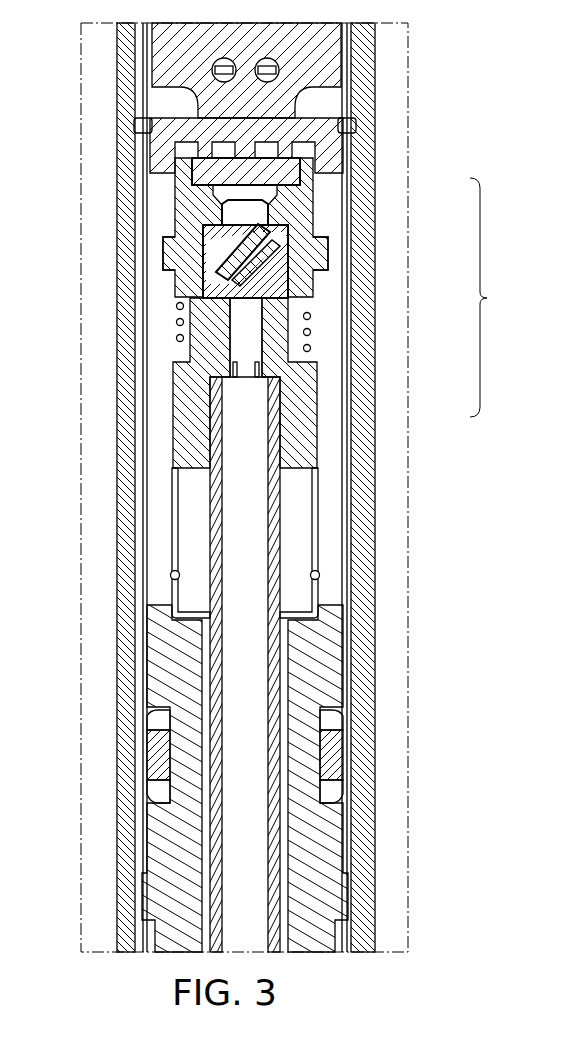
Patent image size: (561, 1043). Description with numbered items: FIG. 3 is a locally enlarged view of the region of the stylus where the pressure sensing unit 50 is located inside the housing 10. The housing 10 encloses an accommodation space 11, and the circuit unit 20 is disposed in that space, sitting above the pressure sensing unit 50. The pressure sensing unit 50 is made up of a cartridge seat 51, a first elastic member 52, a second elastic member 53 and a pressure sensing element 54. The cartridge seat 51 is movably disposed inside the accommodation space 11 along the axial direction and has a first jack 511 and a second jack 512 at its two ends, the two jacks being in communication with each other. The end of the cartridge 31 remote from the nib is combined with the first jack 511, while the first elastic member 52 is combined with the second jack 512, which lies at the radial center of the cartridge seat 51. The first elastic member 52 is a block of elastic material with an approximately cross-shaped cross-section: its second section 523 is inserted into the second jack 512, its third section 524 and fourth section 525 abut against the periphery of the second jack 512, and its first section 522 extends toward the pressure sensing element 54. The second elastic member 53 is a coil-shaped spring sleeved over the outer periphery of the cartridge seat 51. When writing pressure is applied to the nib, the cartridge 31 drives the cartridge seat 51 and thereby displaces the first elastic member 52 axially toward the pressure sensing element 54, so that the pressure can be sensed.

The housing 10 is at (117, 639).
The accommodation space 11 is at (348, 452).
The circuit unit 20 is at (151, 48).
The cartridge 31 is at (277, 487).
The pressure sensing unit 50 is at (492, 297).
The cartridge seat 51 is at (300, 428).
The first jack 511 is at (205, 410).
The second jack 512 is at (232, 300).
The first elastic member 52 is at (300, 250).
The first section 522 is at (220, 212).
The second section 523 is at (176, 306).
The third section 524 is at (212, 246).
The fourth section 525 is at (222, 274).
The second elastic member 53 is at (322, 300).
The pressure sensing element 54 is at (300, 196).